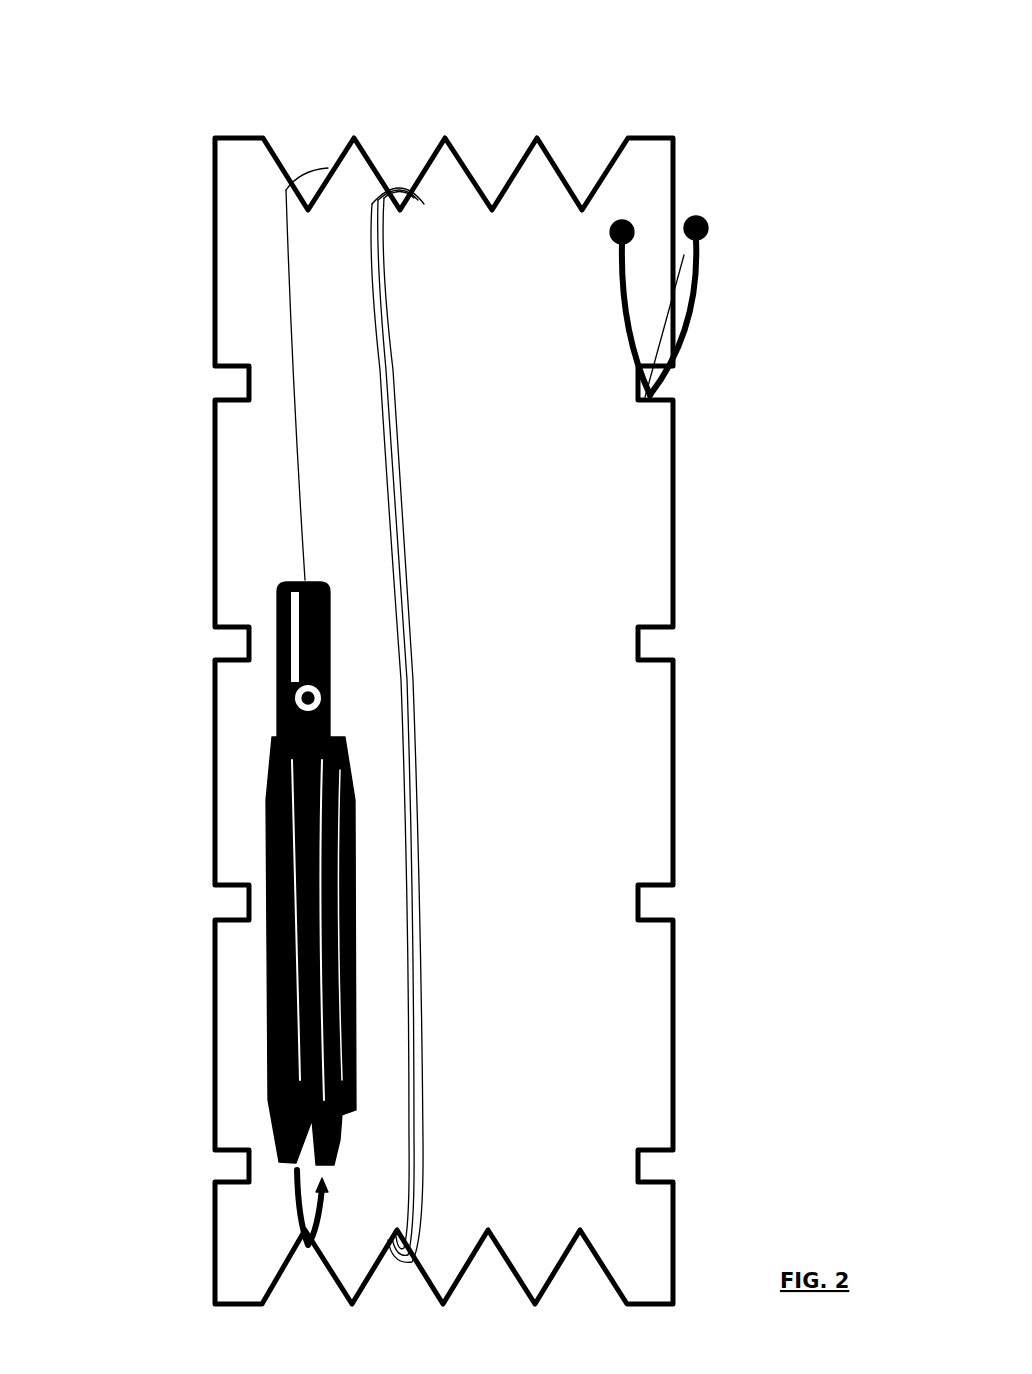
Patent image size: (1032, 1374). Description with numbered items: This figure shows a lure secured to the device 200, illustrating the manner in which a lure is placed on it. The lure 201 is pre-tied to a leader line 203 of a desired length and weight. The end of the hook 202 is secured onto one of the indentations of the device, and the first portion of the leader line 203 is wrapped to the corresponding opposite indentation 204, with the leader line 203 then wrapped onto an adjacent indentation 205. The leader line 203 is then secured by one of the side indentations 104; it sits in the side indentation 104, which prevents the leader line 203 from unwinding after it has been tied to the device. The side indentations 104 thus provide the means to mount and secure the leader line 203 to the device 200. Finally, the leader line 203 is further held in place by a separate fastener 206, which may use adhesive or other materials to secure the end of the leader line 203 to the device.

The device 200 is at (796, 52).
The side indentations 104 is at (657, 645).
The lure 201 is at (262, 597).
The hook 202 is at (290, 1210).
The leader line 203 is at (416, 676).
The opposite indentation 204 is at (298, 158).
The adjacent indentation 205 is at (402, 162).
The fastener 206 is at (712, 284).